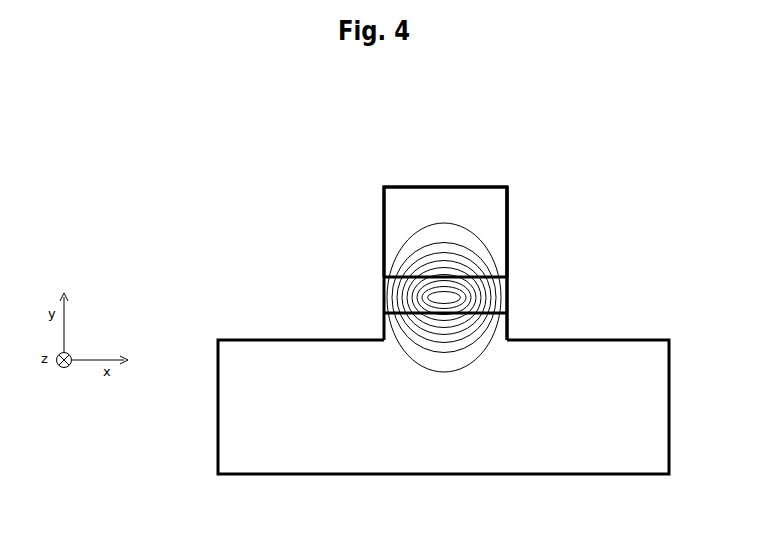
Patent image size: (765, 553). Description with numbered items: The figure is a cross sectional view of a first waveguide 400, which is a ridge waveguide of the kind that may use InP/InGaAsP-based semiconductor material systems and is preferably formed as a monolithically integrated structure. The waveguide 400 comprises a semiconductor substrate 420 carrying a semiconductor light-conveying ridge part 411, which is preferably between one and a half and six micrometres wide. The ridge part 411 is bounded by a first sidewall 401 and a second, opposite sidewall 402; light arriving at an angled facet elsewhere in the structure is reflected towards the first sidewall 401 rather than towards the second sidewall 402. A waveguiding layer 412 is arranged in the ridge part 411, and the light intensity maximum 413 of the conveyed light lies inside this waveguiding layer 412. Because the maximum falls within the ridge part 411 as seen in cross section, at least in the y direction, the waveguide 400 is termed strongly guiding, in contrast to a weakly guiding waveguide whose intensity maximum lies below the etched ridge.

The waveguide 400 is at (342, 162).
The first sidewall 401 is at (384, 225).
The second sidewall 402 is at (507, 224).
The ridge part 411 is at (445, 232).
The waveguiding layer 412 is at (507, 295).
The light intensity maximum 413 is at (444, 297).
The semiconductor substrate 420 is at (443, 407).